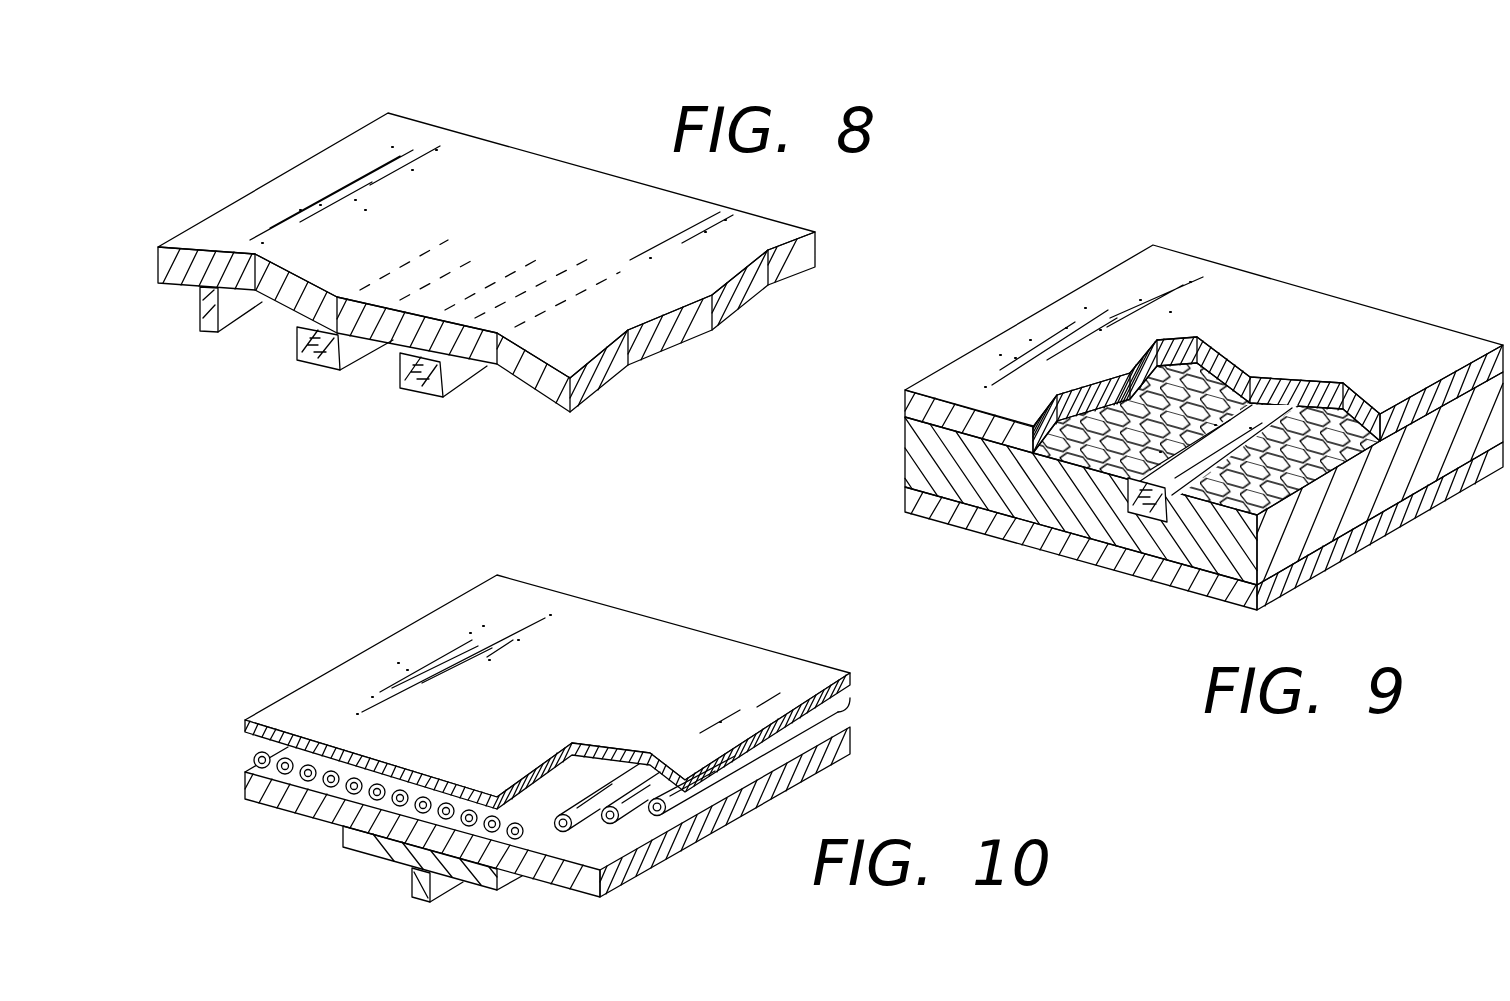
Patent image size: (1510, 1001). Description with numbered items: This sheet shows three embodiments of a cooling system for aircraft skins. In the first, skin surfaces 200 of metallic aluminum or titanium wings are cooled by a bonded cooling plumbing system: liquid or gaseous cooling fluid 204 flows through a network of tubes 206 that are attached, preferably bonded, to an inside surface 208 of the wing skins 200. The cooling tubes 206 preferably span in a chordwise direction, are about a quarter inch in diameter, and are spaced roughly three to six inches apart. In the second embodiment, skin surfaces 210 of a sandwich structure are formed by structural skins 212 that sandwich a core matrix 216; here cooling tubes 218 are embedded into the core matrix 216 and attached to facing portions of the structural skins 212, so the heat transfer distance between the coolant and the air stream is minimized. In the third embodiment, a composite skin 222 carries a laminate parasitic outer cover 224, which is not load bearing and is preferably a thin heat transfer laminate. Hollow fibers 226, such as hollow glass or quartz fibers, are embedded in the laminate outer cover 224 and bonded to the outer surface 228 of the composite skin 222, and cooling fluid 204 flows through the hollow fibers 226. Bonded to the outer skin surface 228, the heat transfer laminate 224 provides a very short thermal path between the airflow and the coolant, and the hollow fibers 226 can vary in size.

In FIG. 8, the skin surfaces 200 is at (486, 266).
In FIG. 8, the cooling fluid 204 is at (307, 362).
In FIG. 9, the cooling fluid 204 is at (1130, 493).
In FIG. 10, the cooling fluid 204 is at (253, 760).
In FIG. 8, the tubes 206 is at (395, 372).
In FIG. 8, the inside surface 208 is at (524, 384).
In FIG. 9, the skin surfaces 210 is at (1160, 397).
In FIG. 9, the structural skins 212 is at (915, 408).
In FIG. 9, the core matrix 216 is at (913, 446).
In FIG. 9, the cooling tubes 218 is at (1154, 524).
In FIG. 10, the composite skin 222 is at (725, 814).
In FIG. 10, the laminate parasitic outer cover 224 is at (289, 685).
In FIG. 10, the hollow fibers 226 is at (594, 772).
In FIG. 10, the outer surface 228 is at (597, 853).